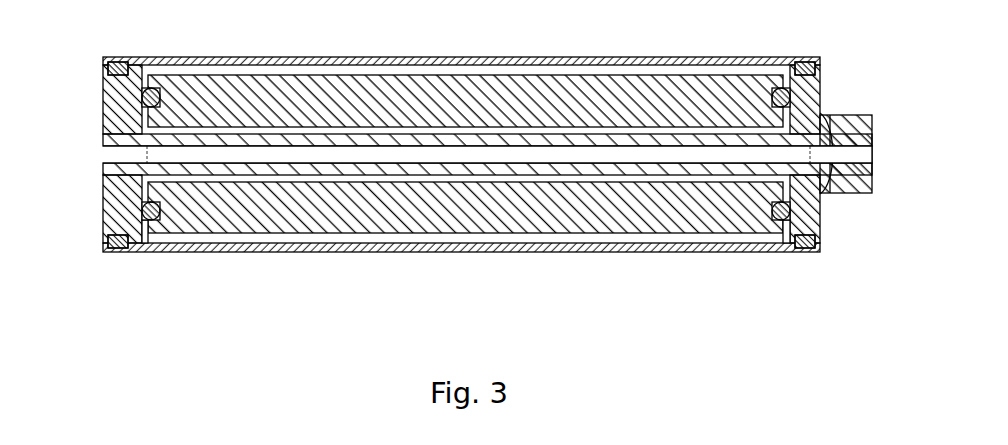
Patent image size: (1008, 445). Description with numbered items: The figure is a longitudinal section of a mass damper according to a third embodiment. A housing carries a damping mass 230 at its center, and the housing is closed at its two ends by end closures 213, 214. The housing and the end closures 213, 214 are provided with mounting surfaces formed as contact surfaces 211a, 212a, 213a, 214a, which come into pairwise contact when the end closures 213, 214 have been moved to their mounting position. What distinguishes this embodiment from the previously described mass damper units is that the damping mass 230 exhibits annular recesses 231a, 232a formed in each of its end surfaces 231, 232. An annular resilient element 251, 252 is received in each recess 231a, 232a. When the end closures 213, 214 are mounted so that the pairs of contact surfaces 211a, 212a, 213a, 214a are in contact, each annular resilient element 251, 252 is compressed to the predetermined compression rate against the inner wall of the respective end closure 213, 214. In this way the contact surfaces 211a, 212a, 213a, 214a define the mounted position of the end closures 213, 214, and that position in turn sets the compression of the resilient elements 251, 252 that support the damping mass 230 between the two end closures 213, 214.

The contact surface 211a is at (138, 58).
The end closure 213 is at (104, 96).
The annular recess 231a is at (158, 93).
The end surface 231 is at (150, 195).
The annular resilient element 251 is at (145, 232).
The contact surface 213a is at (145, 249).
The damping mass 230 is at (587, 76).
The contact surface 212a is at (796, 62).
The end closure 214 is at (820, 72).
The annular recess 232a is at (780, 93).
The end surface 232 is at (785, 200).
The annular resilient element 252 is at (787, 227).
The contact surface 214a is at (785, 246).